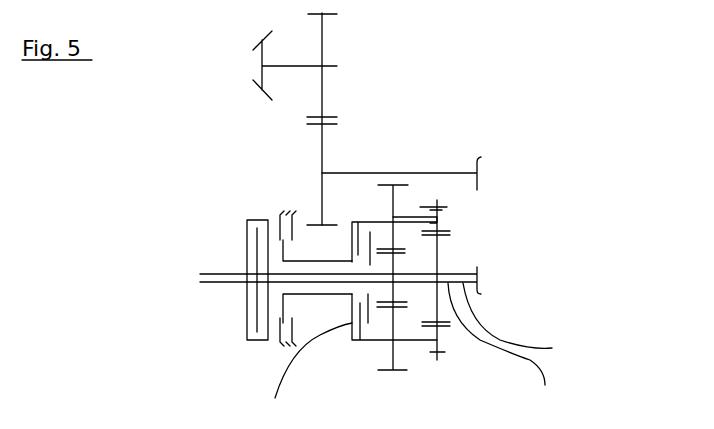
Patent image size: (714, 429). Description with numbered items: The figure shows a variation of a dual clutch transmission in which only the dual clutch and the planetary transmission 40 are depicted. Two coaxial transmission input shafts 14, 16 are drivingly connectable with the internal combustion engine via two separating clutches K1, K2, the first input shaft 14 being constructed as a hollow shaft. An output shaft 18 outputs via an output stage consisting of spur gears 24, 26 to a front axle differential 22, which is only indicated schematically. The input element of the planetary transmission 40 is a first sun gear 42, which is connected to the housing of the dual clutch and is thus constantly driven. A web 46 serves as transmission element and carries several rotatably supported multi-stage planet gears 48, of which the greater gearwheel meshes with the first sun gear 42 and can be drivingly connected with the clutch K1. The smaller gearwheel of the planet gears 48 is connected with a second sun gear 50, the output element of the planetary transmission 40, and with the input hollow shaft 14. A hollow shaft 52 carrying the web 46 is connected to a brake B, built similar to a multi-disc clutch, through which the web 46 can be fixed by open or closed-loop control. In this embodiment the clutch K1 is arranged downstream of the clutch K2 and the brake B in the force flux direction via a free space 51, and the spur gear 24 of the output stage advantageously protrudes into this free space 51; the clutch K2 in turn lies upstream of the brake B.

The first transmission input shaft 14 is at (523, 320).
The second transmission input shaft 16 is at (510, 343).
The output shaft 18 is at (442, 173).
The front axle differential 22 is at (250, 39).
The spur gear 24 is at (353, 140).
The spur gear 26 is at (324, 35).
The planetary transmission 40 is at (393, 376).
The first sun gear 42 is at (440, 263).
The web 46 is at (305, 373).
The multi-stage planet gears 48 is at (407, 213).
The second sun gear 50 is at (440, 250).
The free space 51 is at (310, 257).
The hollow shaft 52 is at (312, 294).
The brake B is at (290, 210).
The separating clutch K1 is at (362, 343).
The separating clutch K2 is at (247, 232).